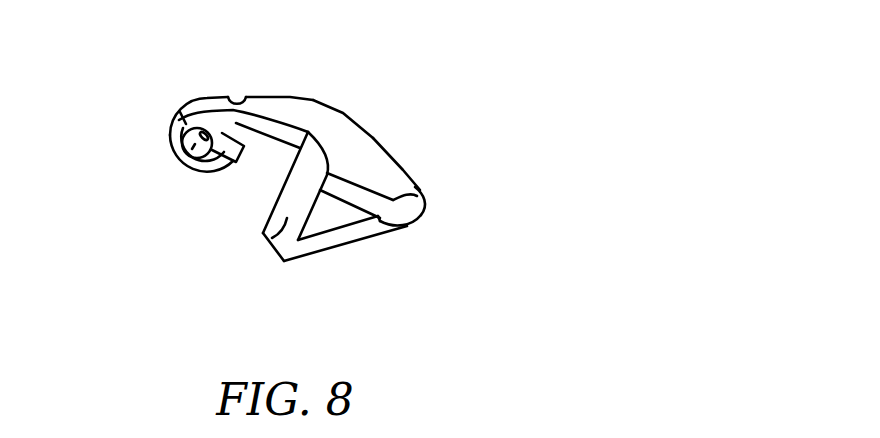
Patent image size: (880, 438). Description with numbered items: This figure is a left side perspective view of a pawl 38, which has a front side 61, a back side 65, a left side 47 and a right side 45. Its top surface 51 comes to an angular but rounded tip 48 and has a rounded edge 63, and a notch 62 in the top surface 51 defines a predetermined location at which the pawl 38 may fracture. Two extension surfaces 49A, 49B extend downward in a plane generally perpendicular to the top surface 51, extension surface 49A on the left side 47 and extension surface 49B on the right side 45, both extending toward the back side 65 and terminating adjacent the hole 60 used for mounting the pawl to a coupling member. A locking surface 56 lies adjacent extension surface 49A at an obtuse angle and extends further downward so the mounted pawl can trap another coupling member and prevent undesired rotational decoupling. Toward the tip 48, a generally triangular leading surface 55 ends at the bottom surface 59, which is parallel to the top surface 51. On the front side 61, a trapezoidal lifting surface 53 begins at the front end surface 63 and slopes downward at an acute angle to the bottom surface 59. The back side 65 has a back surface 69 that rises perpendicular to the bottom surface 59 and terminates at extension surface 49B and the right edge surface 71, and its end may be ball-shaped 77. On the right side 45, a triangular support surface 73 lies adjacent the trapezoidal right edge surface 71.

The pawl 38 is at (470, 124).
The right side 45 is at (343, 48).
The left side 47 is at (158, 270).
The tip 48 is at (396, 226).
The extension surface 49A is at (263, 149).
The extension surface 49B is at (277, 84).
The top surface 51 is at (366, 148).
The lifting surface 53 is at (310, 272).
The leading surface 55 is at (338, 222).
The locking surface 56 is at (268, 240).
The bottom surface 59 is at (273, 284).
The hole 60 is at (177, 166).
The front side 61 is at (468, 264).
The notch 62 is at (236, 97).
The rounded edge 63 is at (422, 207).
The back side 65 is at (124, 104).
The back surface 69 is at (253, 216).
The right edge surface 71 is at (322, 94).
The support surface 73 is at (425, 164).
The ball-shaped end 77 is at (156, 139).